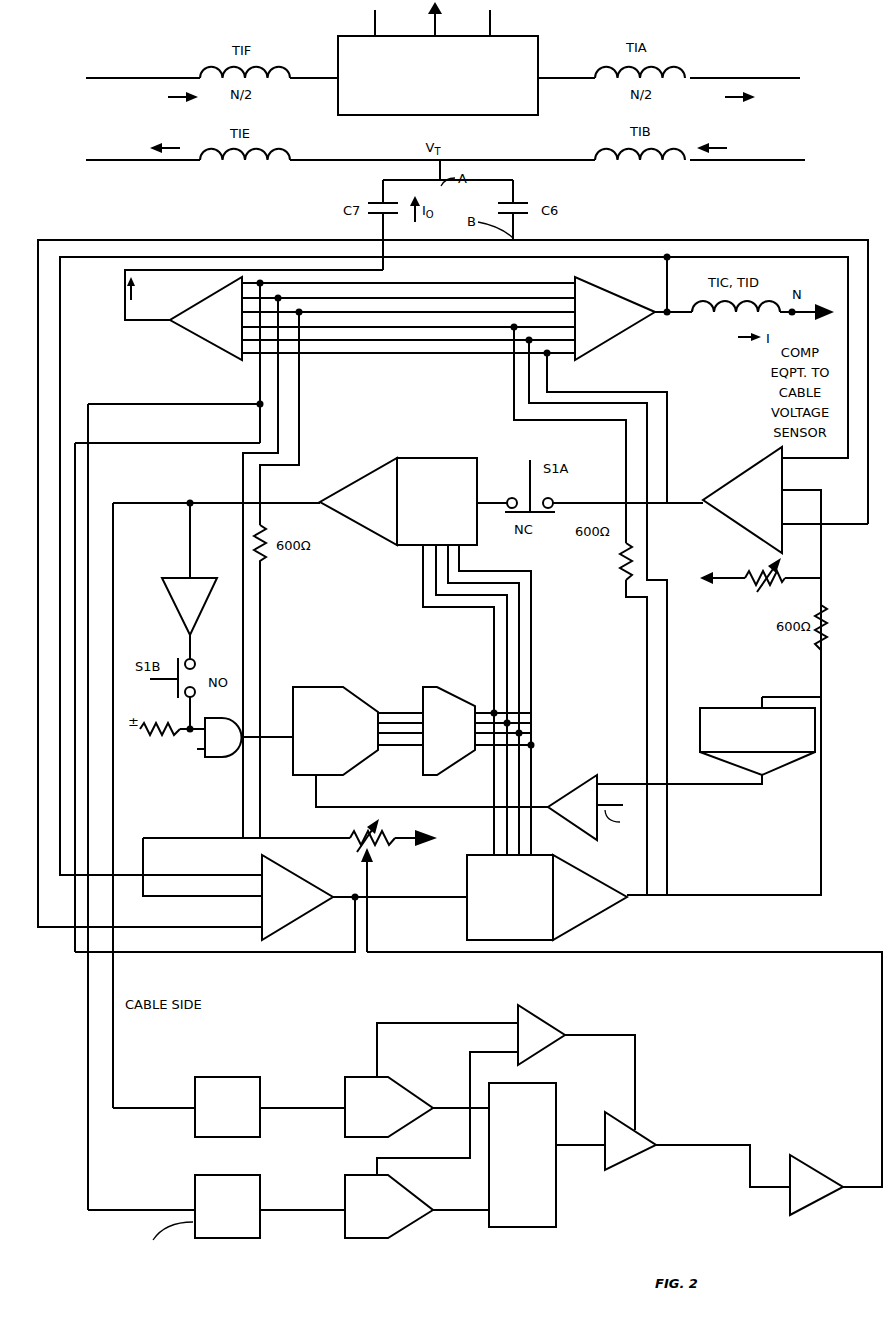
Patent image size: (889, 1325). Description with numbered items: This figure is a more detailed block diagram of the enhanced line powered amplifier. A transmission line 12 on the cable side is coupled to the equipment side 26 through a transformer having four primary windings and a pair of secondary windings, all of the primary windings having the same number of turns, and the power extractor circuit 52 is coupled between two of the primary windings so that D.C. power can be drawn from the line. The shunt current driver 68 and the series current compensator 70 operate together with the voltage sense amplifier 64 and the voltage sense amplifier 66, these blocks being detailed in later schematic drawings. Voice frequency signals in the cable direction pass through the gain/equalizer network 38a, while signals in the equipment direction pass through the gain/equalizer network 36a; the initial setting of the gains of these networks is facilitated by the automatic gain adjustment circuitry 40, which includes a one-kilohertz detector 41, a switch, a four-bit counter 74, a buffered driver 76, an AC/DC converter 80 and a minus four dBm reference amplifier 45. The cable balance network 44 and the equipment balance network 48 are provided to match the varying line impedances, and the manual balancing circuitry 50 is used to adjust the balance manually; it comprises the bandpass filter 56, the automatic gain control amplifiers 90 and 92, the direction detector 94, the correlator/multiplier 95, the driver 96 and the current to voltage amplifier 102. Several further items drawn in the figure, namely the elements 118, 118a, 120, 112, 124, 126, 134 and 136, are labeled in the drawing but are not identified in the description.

The transmission line 12 is at (118, 113).
The equipment side 26 is at (772, 113).
The power extractor circuit 52 is at (445, 58).
The shunt current driver 68 is at (210, 300).
The series current compensator 70 is at (605, 288).
The cable side conductor loop 118 is at (75, 942).
The equipment side conductor loop 118a is at (668, 418).
The equipment side return line 120 is at (830, 530).
The voltage sense amplifier 66 is at (729, 480).
The gain/equalizer network 38a is at (378, 470).
The 1 KHz detector 41 is at (175, 617).
The automatic gain adjustment circuitry 40 is at (384, 616).
The 4-bit counter 74 is at (353, 770).
The buffered driver 76 is at (440, 778).
The equipment balance network 48 is at (730, 556).
The AC/DC converter 80 is at (742, 708).
The −4.0 dBm reference amplifier 45 is at (582, 786).
The cable balance network 44 is at (311, 824).
The manual balancing circuitry 50 is at (367, 885).
The voltage sense amplifier 64 is at (262, 868).
The summing node 124 is at (342, 905).
The cable side input line 112 is at (205, 926).
The gain/equalizer network 36a is at (480, 855).
The amplifier U4A 126 is at (598, 915).
The first prefilter input line 134 is at (175, 1108).
The second prefilter input line 136 is at (170, 1210).
The bandpass filter 56 is at (228, 1077).
The automatic gain control amplifier 90 is at (413, 1093).
The automatic gain control amplifier 92 is at (428, 1195).
The direction detector 94 is at (540, 1007).
The correlator/multiplier 95 is at (532, 1083).
The driver 96 is at (622, 1115).
The current to voltage amplifier 102 is at (810, 1166).